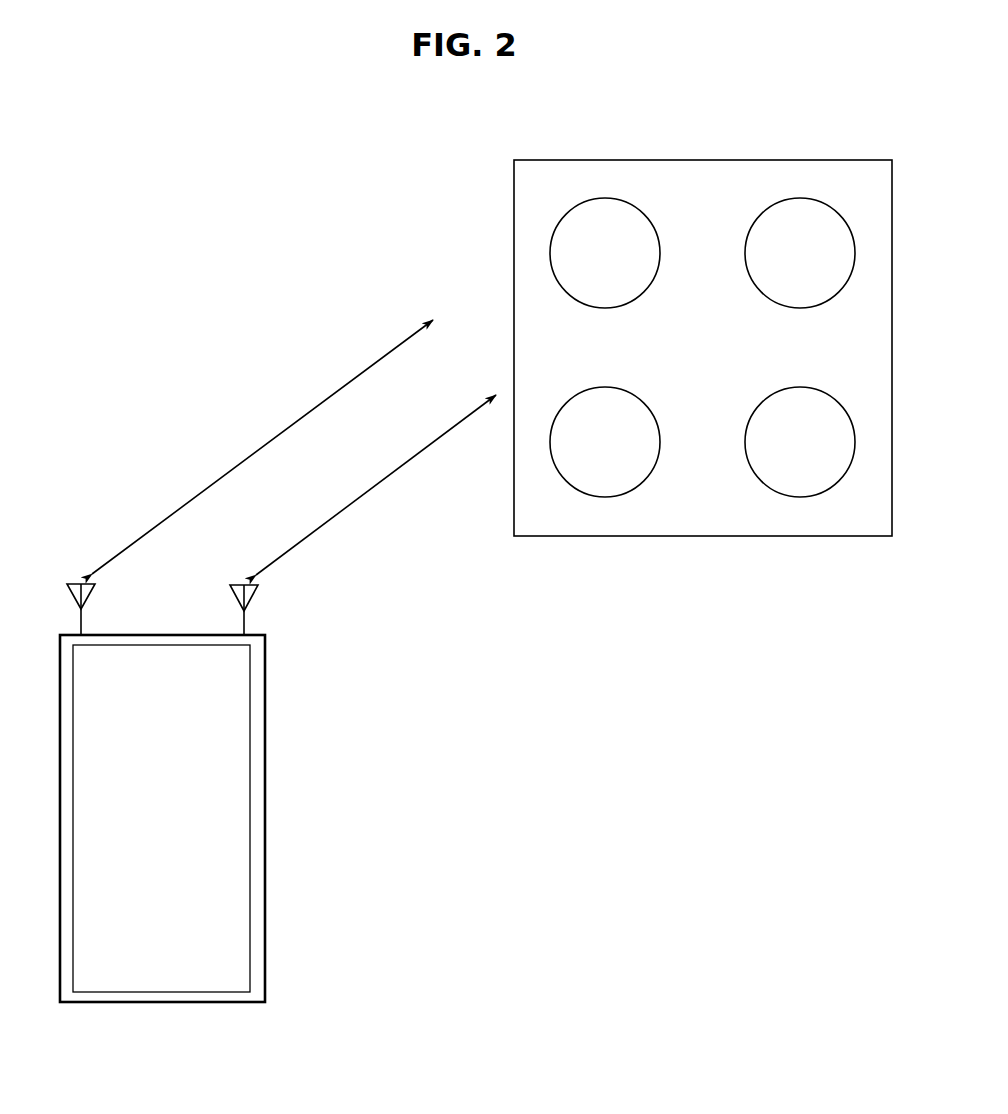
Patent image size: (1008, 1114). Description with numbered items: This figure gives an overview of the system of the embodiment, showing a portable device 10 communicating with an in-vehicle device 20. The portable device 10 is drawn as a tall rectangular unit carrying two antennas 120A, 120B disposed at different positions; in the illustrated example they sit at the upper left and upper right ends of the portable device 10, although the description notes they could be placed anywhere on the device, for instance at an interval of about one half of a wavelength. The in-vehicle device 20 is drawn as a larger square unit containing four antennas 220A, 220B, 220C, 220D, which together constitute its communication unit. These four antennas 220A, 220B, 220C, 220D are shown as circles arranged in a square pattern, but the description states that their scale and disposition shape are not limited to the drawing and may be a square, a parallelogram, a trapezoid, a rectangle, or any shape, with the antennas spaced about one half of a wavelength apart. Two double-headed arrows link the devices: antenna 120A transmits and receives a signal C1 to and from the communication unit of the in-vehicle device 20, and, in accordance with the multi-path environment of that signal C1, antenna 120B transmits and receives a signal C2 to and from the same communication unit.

The portable device 10 is at (163, 1003).
The in-vehicle device 20 is at (857, 160).
The antenna 120A is at (70, 584).
The antenna 120B is at (236, 585).
The antenna 220A is at (647, 217).
The antenna 220B is at (842, 217).
The antenna 220C is at (647, 406).
The antenna 220D is at (842, 406).
The signal C1 is at (261, 446).
The signal C2 is at (324, 518).